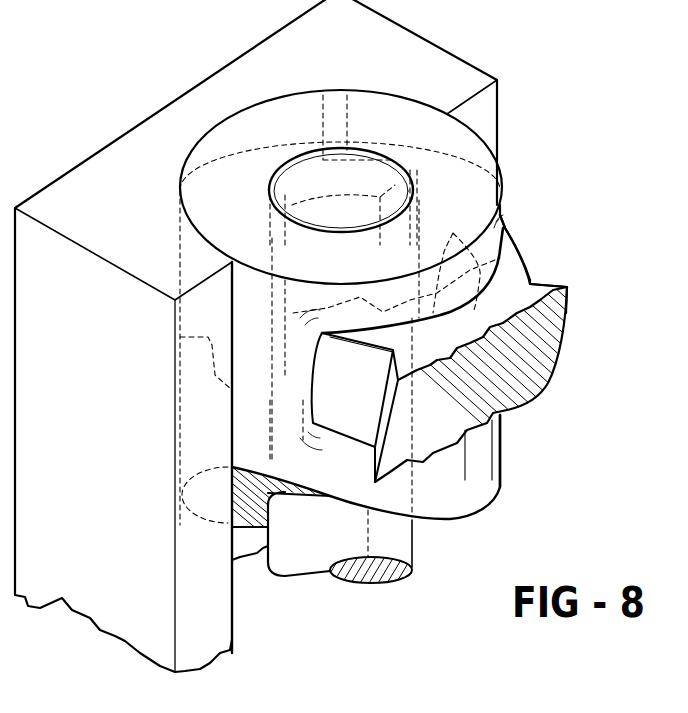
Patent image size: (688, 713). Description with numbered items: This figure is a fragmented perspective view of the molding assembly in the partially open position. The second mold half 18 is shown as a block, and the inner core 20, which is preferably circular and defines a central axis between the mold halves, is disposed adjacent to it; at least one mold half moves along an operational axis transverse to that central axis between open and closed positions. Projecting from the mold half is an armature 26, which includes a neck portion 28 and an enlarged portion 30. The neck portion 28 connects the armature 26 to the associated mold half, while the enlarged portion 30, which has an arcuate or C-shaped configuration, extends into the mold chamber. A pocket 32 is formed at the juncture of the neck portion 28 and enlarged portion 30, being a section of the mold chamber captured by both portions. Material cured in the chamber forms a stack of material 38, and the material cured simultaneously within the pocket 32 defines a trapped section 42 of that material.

The second mold half 18 is at (110, 167).
The inner core 20 is at (353, 175).
The armature 26 is at (516, 375).
The neck portion 28 is at (547, 295).
The enlarged portion 30 is at (514, 254).
The pocket 32 is at (533, 277).
The stack of material 38 is at (508, 473).
The trapped section 42 is at (297, 387).